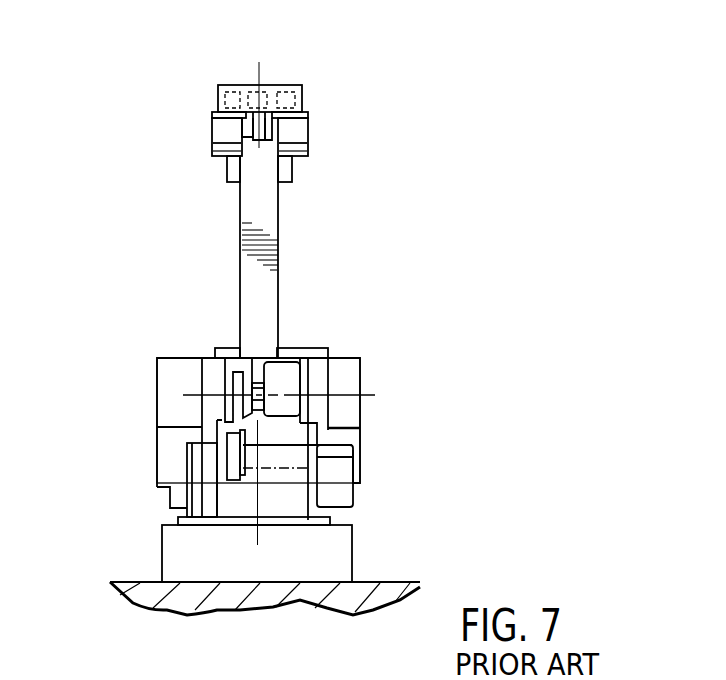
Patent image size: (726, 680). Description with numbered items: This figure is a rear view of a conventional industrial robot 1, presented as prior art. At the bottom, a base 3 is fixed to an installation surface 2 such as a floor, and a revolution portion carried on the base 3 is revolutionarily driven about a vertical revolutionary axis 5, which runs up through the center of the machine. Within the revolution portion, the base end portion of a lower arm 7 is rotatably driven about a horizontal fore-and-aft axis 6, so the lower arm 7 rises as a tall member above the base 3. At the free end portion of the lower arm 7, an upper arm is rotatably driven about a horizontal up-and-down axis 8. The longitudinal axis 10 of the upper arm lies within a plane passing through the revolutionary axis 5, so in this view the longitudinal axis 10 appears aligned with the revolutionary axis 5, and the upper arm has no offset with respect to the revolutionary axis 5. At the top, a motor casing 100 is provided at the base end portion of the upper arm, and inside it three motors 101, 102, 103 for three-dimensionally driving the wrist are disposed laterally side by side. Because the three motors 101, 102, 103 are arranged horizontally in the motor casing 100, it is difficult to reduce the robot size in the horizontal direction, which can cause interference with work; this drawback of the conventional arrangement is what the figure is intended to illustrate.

The industrial robot 1 is at (127, 229).
The installation surface 2 is at (182, 587).
The base 3 is at (177, 531).
The vertical revolutionary axis 5 is at (256, 498).
The horizontal fore-and-aft axis 6 is at (368, 395).
The lower arm 7 is at (280, 265).
The horizontal up-and-down axis 8 is at (217, 143).
The longitudinal axis 10 is at (262, 72).
The motor casing 100 is at (220, 88).
The motor 101 is at (220, 100).
The motor 102 is at (247, 87).
The motor 103 is at (300, 100).